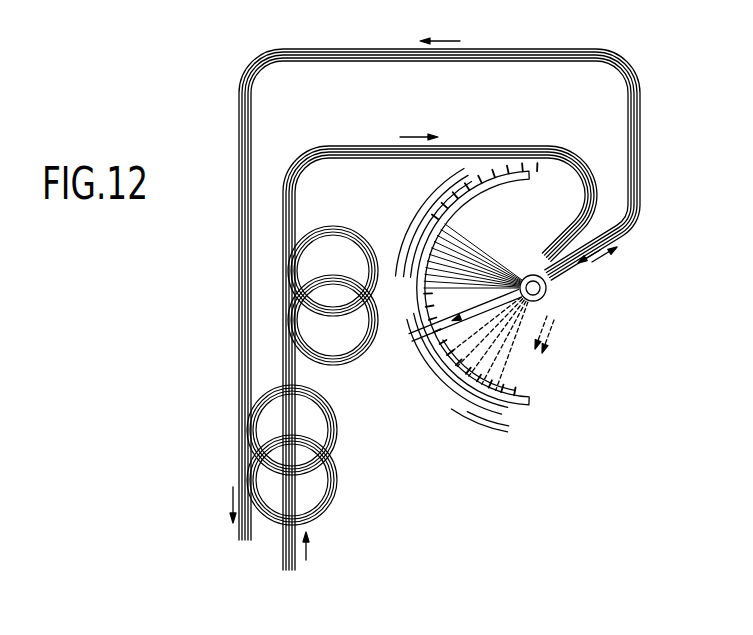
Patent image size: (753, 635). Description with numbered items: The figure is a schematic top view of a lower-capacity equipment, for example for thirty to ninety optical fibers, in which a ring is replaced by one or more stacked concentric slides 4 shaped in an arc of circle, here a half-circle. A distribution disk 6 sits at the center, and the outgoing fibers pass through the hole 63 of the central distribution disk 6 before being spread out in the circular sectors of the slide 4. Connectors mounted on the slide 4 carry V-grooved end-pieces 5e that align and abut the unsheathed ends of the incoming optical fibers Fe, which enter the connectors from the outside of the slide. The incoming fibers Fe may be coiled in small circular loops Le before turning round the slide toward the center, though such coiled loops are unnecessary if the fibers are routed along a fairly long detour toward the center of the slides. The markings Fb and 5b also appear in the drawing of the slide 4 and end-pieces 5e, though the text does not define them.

The web strip path Fb is at (589, 48).
The coiled loop Le is at (351, 363).
The stacked concentric slide 4 is at (531, 403).
The inner pins 5b is at (527, 392).
The first V-grooved end-piece 5e is at (520, 413).
The incoming optical fiber Fe is at (500, 433).
The distribution disk 6 is at (547, 291).
The hole 63 is at (541, 298).